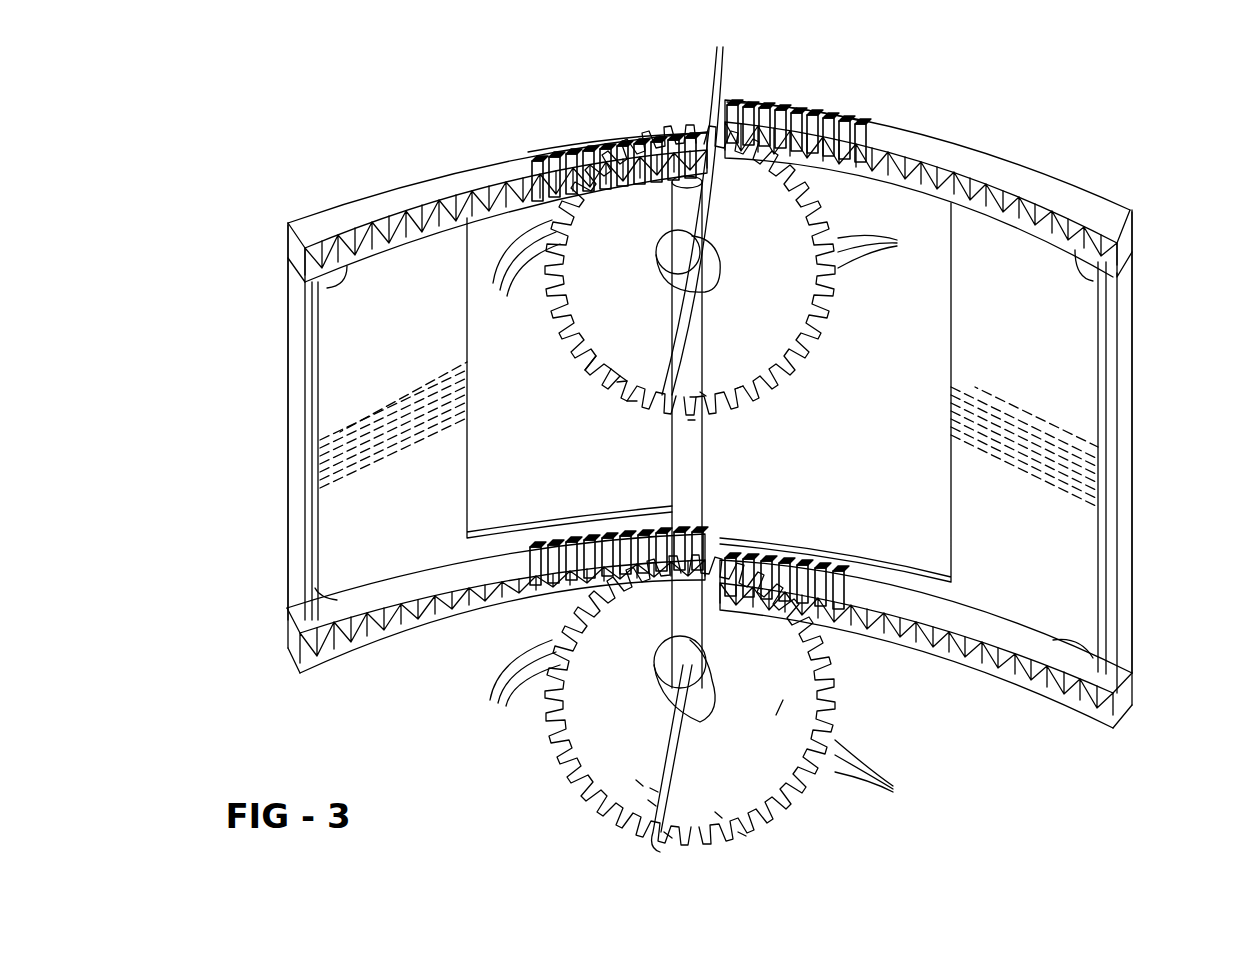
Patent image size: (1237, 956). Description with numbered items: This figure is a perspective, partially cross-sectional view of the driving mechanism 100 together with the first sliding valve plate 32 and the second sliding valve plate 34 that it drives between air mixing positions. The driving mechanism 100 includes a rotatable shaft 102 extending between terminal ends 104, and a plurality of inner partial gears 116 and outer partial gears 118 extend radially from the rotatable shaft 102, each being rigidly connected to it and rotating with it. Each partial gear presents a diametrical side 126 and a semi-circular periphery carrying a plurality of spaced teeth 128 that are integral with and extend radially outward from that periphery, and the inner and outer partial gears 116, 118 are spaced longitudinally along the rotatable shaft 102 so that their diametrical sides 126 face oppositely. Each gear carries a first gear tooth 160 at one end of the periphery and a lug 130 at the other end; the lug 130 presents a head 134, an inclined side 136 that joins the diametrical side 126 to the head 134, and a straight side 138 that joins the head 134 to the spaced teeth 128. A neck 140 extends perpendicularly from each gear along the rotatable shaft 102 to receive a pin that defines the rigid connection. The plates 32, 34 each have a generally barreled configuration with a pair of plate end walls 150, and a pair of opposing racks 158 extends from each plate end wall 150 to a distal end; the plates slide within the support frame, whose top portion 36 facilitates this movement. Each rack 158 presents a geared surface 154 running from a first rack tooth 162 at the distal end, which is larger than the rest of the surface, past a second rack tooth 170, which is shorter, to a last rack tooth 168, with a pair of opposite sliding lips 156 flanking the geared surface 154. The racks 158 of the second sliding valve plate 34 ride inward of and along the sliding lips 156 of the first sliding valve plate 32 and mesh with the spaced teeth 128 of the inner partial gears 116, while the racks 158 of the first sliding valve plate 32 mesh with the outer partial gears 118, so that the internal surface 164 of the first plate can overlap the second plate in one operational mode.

The first sliding valve plate 32 is at (1146, 324).
The second sliding valve plate 34 is at (278, 328).
The top portion 36 is at (390, 622).
The driving mechanism 100 is at (699, 118).
The rotatable shaft 102 is at (696, 468).
The terminal ends 104 is at (701, 184).
The inner partial gears 116 is at (545, 360).
The outer partial gears 118 is at (841, 306).
The diametrical side 126 is at (590, 366).
The spaced teeth 128 is at (704, 510).
The lug 130 is at (615, 393).
The head 134 is at (660, 400).
The inclined side 136 is at (617, 384).
The straight side 138 is at (630, 404).
The neck 140 is at (712, 252).
The plate end walls 150 is at (287, 376).
The geared surface 154 is at (537, 160).
The sliding lips 156 is at (330, 280).
The racks 158 is at (332, 206).
The first gear tooth 160 is at (688, 147).
The first rack tooth 162 is at (701, 210).
The internal surface 164 is at (360, 500).
The last rack tooth 168 is at (297, 252).
The second rack tooth 170 is at (667, 146).